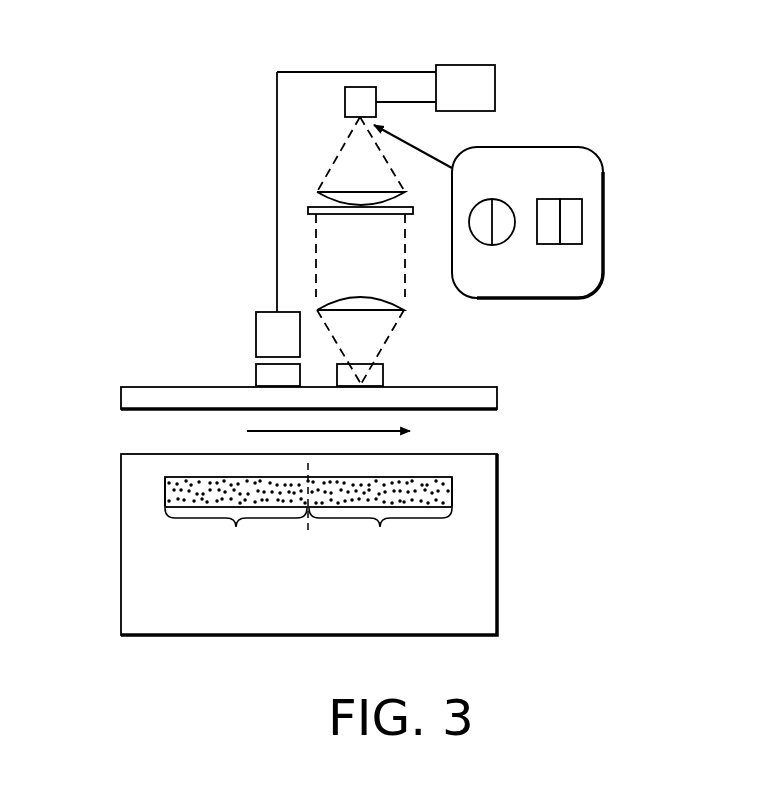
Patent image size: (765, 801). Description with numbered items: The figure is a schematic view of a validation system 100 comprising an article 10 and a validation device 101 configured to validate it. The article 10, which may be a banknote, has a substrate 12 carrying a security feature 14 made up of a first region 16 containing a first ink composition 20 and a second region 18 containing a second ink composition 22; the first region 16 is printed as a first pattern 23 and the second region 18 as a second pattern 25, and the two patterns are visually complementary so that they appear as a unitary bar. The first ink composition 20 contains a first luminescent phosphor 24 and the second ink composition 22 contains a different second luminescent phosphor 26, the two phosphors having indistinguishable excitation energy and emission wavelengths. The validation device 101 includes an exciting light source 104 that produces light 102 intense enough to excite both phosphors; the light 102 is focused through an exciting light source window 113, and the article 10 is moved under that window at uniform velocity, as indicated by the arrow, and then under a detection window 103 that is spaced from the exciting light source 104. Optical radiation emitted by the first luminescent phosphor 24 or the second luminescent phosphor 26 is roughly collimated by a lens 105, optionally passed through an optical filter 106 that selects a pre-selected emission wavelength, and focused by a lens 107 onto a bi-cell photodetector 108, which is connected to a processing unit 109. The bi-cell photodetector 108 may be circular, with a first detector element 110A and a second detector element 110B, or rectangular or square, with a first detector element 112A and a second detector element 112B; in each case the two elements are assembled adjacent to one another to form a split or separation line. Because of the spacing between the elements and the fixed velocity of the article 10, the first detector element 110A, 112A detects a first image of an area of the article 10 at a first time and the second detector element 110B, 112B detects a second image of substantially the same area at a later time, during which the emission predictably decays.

The validation system 100 is at (151, 49).
The validation device 101 is at (166, 304).
The light 102 is at (271, 393).
The detection window 103 is at (377, 376).
The exciting light source 104 is at (261, 339).
The lens 105 is at (398, 305).
The optical filter 106 is at (310, 210).
The lens 107 is at (342, 195).
The bi-cell photodetector 108 is at (345, 105).
The processing unit 109 is at (495, 78).
The first detector element 110A is at (482, 230).
The second detector element 110B is at (502, 230).
The first detector element 112A is at (549, 207).
The second detector element 112B is at (580, 222).
The exciting light source window 113 is at (261, 375).
The article 10 is at (120, 477).
The substrate 12 is at (170, 637).
The security feature 14 is at (194, 464).
The first region 16 is at (236, 526).
The second region 18 is at (380, 525).
The first ink composition 20 is at (275, 503).
The second ink composition 22 is at (340, 503).
The first pattern 23 is at (158, 492).
The first luminescent phosphor 24 is at (198, 503).
The second pattern 25 is at (461, 493).
The second luminescent phosphor 26 is at (405, 502).